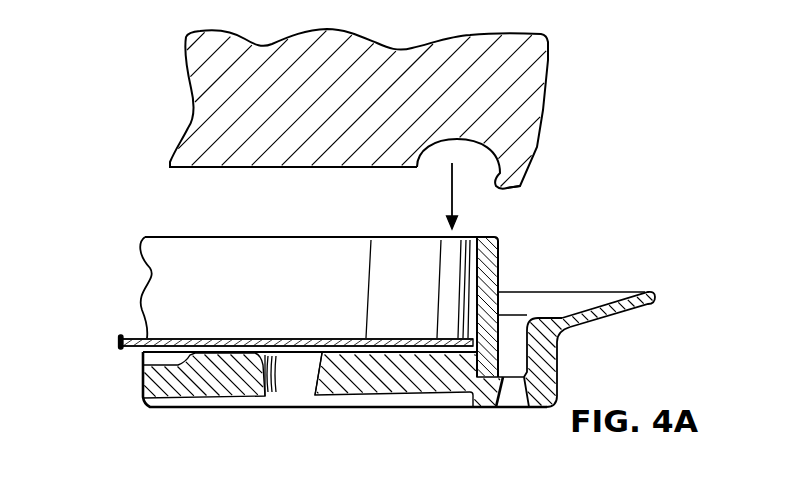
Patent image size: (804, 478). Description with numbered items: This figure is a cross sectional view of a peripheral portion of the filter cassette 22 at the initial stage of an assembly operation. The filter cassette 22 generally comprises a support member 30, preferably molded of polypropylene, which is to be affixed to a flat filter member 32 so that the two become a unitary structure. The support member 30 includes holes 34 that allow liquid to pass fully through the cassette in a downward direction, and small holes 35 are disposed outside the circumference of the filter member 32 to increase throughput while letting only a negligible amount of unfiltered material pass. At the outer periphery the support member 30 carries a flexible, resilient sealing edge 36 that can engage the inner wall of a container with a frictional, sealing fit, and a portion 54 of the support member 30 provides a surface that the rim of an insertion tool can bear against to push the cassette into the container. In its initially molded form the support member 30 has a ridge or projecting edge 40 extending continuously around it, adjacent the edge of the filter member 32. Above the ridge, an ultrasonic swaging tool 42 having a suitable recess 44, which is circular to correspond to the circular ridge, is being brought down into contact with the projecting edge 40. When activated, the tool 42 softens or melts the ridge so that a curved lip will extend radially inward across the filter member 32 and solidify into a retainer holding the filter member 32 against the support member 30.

The filter cassette 22 is at (102, 319).
The support member 30 is at (561, 367).
The filter member 32 is at (378, 338).
The holes 34 is at (290, 383).
The small holes 35 is at (512, 399).
The peripheral sealing edge 36 is at (620, 292).
The ridge or projecting edge 40 is at (498, 249).
The ultrasonic swaging tool 42 is at (363, 47).
The recess 44 is at (498, 189).
The portion of support member 54 is at (516, 340).